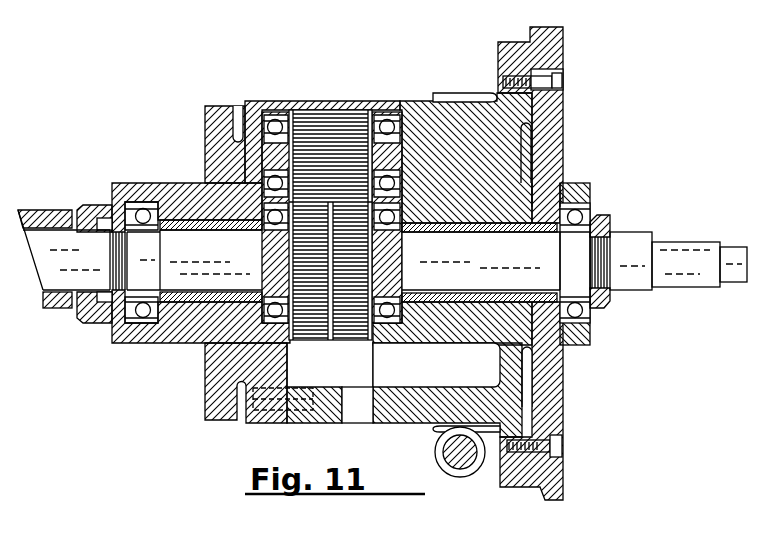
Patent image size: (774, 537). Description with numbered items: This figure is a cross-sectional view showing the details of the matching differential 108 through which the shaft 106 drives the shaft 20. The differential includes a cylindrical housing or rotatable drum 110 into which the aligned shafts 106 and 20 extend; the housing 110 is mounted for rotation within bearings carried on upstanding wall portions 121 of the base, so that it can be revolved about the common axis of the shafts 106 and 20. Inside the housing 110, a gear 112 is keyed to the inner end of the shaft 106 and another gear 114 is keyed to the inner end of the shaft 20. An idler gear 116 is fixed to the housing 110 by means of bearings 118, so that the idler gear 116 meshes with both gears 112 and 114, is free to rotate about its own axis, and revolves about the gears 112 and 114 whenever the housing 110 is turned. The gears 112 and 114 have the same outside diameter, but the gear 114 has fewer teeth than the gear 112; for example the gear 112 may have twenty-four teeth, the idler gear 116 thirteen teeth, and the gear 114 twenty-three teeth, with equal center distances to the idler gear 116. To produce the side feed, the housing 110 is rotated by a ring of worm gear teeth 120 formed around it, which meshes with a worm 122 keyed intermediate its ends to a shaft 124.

The shaft 20 is at (200, 291).
The shaft 106 is at (623, 240).
The matching differential 108 is at (423, 94).
The cylindrical housing 110 is at (329, 424).
The gear 112 is at (353, 341).
The gear 114 is at (307, 340).
The idler gear 116 is at (318, 127).
The bearings 118 is at (273, 119).
The worm gear teeth 120 is at (462, 98).
The upstanding wall portions 121 is at (203, 418).
The worm 122 is at (455, 468).
The shaft 124 is at (467, 464).